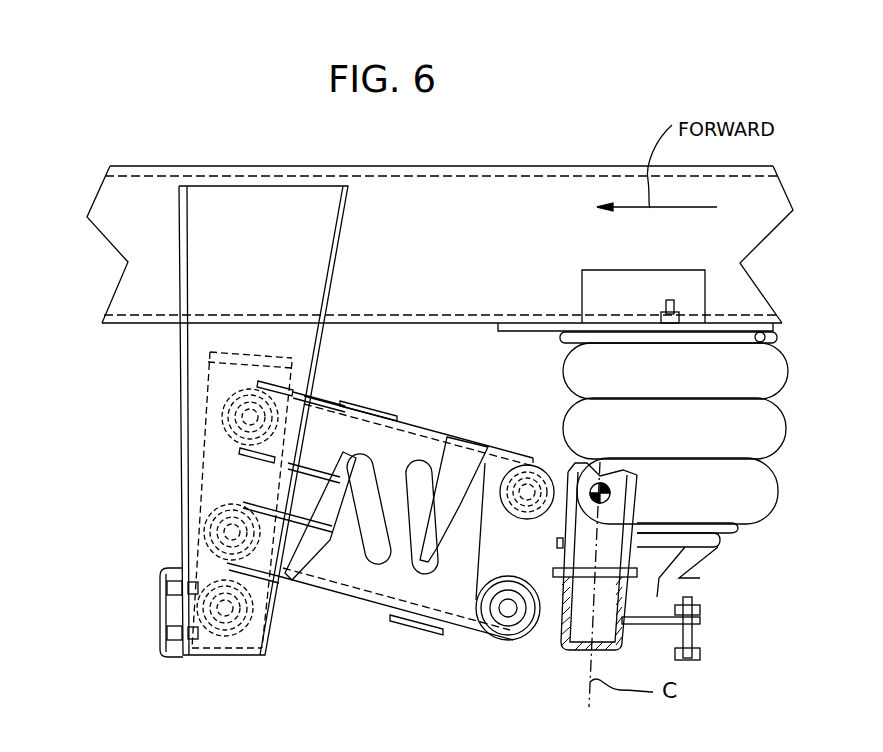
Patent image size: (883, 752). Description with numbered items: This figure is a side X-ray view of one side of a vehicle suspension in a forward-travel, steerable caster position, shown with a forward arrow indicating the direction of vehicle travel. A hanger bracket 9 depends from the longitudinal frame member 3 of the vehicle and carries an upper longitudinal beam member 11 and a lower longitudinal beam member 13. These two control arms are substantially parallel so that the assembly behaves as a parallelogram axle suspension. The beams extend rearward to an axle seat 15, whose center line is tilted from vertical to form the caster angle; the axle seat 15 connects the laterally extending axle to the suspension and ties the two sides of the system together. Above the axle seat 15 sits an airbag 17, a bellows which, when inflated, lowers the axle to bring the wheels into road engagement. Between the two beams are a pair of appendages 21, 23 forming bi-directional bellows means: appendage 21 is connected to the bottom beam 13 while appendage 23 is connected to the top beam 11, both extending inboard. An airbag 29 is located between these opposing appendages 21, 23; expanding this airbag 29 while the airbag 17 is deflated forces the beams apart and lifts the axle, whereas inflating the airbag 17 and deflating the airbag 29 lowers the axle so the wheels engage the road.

The longitudinal frame member 3 is at (480, 198).
The hanger bracket 9 is at (266, 202).
The upper longitudinal beam member 11 is at (327, 427).
The lower longitudinal beam member 13 is at (447, 608).
The axle seat 15 is at (538, 558).
The airbag 17 is at (730, 367).
The appendage 21 is at (315, 572).
The appendage 23 is at (462, 453).
The airbag 29 is at (398, 460).